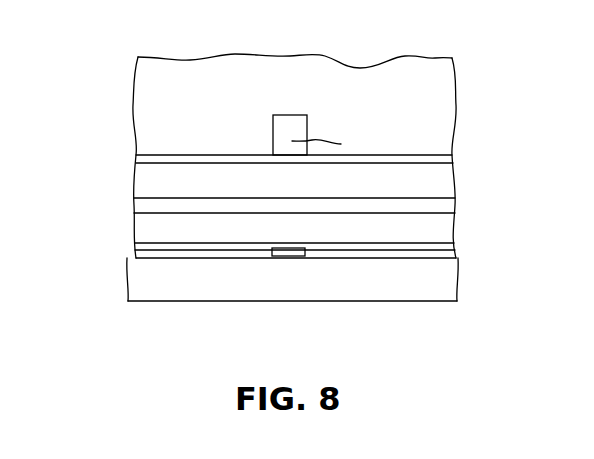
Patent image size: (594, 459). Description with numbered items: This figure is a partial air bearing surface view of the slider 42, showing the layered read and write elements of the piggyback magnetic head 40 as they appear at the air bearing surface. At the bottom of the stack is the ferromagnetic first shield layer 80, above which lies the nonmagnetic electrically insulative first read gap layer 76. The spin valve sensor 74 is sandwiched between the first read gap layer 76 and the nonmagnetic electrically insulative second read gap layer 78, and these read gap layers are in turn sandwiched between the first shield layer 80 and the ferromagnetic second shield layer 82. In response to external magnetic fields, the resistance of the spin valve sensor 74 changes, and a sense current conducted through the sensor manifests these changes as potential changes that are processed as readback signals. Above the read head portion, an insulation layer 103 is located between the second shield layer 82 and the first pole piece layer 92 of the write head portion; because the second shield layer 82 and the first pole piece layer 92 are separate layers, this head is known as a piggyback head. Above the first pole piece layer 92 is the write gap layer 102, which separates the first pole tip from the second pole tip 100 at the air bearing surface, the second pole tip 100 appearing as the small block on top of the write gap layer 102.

The magnetic head 40 is at (472, 74).
The slider 42 is at (138, 85).
The second pole tip 100 is at (287, 122).
The write gap layer 102 is at (208, 160).
The first pole piece layer 92 is at (138, 183).
The insulation layer 103 is at (445, 208).
The second shield layer 82 is at (138, 233).
The second read gap layer 78 is at (415, 248).
The first read gap layer 76 is at (192, 260).
The spin valve sensor 74 is at (290, 257).
The first shield layer 80 is at (445, 285).